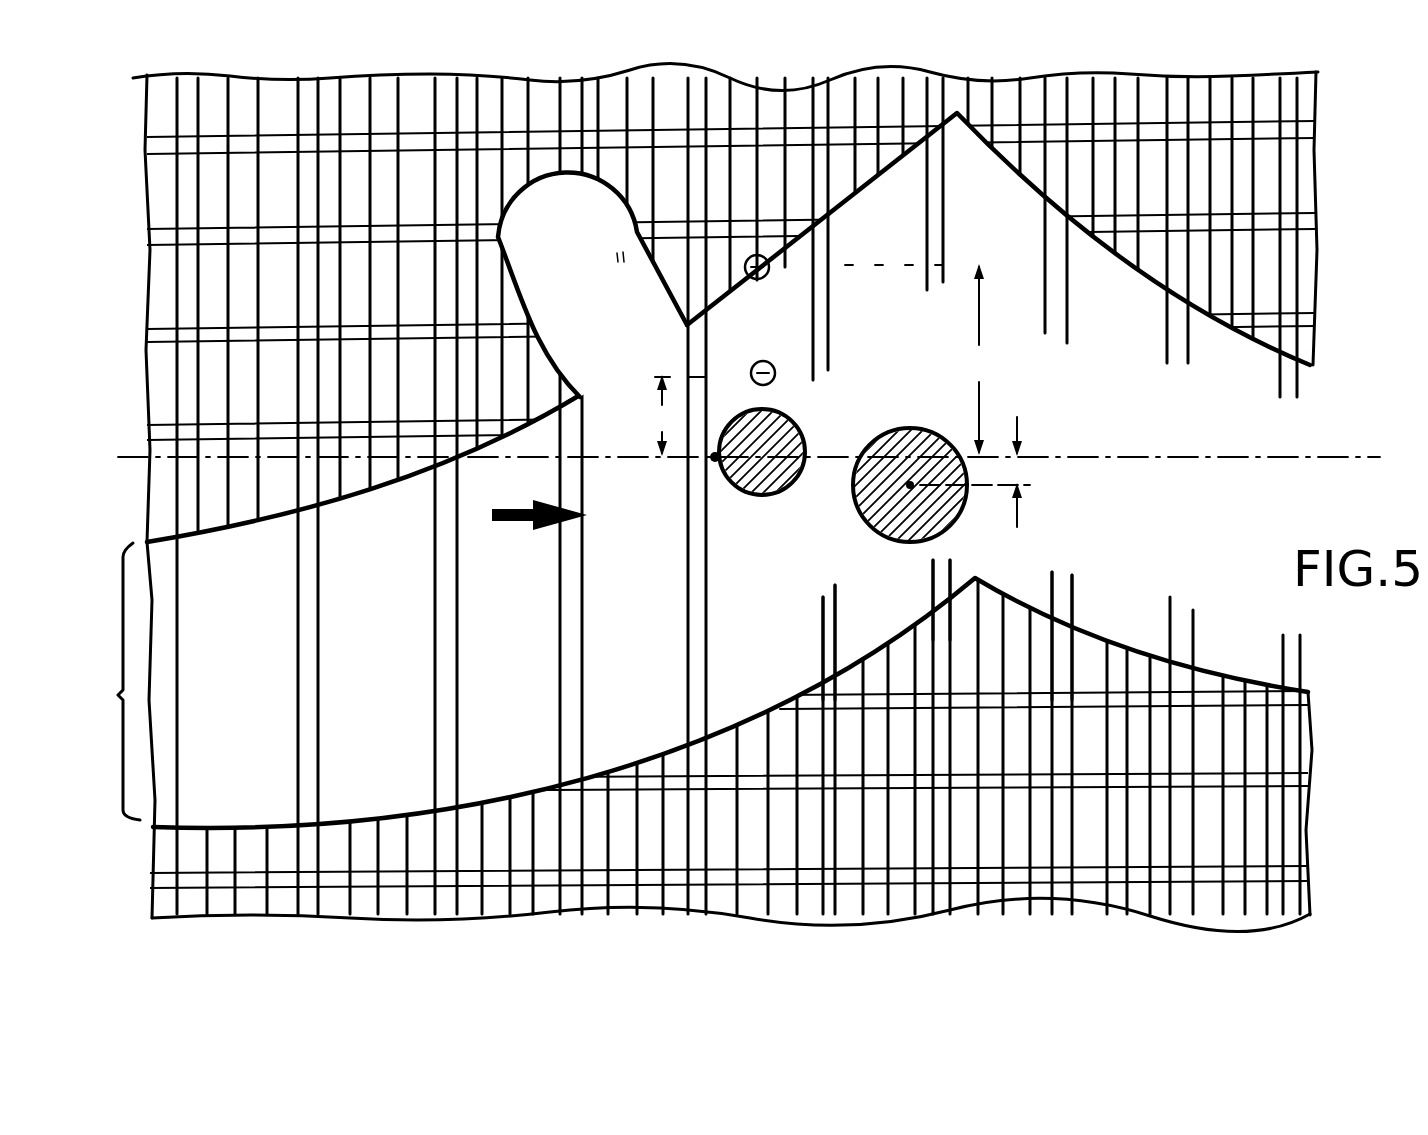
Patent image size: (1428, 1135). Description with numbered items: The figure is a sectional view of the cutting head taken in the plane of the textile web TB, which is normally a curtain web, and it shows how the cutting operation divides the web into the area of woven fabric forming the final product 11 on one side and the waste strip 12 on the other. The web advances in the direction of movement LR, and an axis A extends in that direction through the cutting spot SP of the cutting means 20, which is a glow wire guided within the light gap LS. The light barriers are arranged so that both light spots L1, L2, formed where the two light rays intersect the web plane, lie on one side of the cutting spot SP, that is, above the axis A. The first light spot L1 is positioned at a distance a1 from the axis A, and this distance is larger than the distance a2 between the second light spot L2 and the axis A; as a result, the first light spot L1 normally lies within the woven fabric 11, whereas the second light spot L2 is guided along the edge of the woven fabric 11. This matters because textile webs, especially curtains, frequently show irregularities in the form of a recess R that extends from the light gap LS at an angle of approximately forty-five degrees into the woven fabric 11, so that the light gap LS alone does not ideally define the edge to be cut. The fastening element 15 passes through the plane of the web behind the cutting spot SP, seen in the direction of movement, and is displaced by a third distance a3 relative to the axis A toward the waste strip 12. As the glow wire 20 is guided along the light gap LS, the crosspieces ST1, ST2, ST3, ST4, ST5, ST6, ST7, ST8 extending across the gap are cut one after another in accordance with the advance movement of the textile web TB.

The textile web TB is at (1265, 297).
The final product 11 is at (1290, 344).
The waste strip 12 is at (1290, 732).
The fastening element 15 is at (902, 443).
The cutting means 20 is at (807, 432).
The axis A is at (1100, 440).
The recess R is at (500, 235).
The cutting spot SP is at (715, 455).
The first light spot L1 is at (770, 277).
The second light spot L2 is at (770, 367).
The distance a1 is at (924, 359).
The distance a2 is at (679, 415).
The third distance a3 is at (979, 472).
The direction of movement LR is at (508, 522).
The light gap LS is at (110, 681).
The crosspiece ST1 is at (162, 788).
The crosspiece ST2 is at (305, 763).
The crosspiece ST3 is at (447, 748).
The crosspiece ST4 is at (570, 712).
The crosspiece ST5 is at (695, 675).
The crosspiece ST6 is at (825, 622).
The crosspiece ST7 is at (940, 573).
The crosspiece ST8 is at (1057, 592).